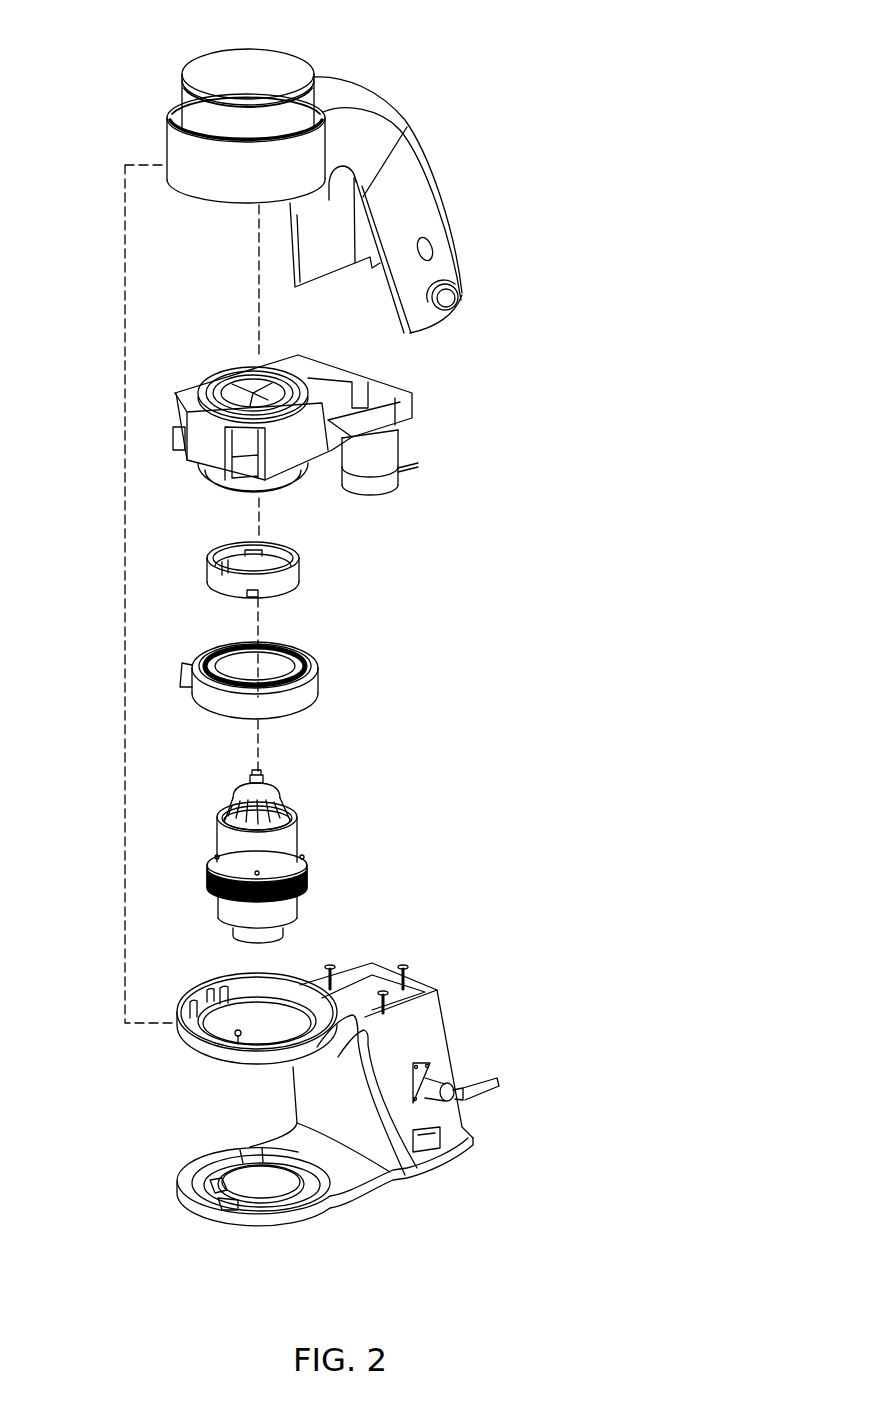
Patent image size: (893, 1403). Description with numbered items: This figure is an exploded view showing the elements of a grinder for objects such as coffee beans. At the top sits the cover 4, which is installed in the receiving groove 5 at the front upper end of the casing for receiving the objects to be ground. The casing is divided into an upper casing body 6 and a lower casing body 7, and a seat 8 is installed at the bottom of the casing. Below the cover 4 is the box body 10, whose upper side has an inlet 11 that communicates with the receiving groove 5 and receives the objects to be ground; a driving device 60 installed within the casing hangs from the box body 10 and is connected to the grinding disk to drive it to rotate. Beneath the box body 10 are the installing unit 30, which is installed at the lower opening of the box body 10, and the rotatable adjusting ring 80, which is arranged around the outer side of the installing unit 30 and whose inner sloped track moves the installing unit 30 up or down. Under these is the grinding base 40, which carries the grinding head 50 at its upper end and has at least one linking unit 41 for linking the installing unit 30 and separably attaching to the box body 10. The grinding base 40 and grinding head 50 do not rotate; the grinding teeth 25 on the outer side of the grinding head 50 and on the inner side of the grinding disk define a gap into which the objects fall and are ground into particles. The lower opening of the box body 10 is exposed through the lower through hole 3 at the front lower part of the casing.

The lower through hole 3 is at (222, 1028).
The cover 4 is at (233, 67).
The receiving groove 5 is at (182, 90).
The upper casing body 6 is at (440, 187).
The lower casing body 7 is at (338, 1069).
The seat 8 is at (352, 1197).
The box body 10 is at (343, 388).
The inlet 11 is at (232, 372).
The grinding teeth 25 is at (283, 795).
The installing unit 30 is at (297, 563).
The grinding base 40 is at (275, 872).
The linking unit 41 is at (213, 853).
The grinding head 50 is at (296, 776).
The driving device 60 is at (408, 488).
The adjusting ring 80 is at (318, 678).